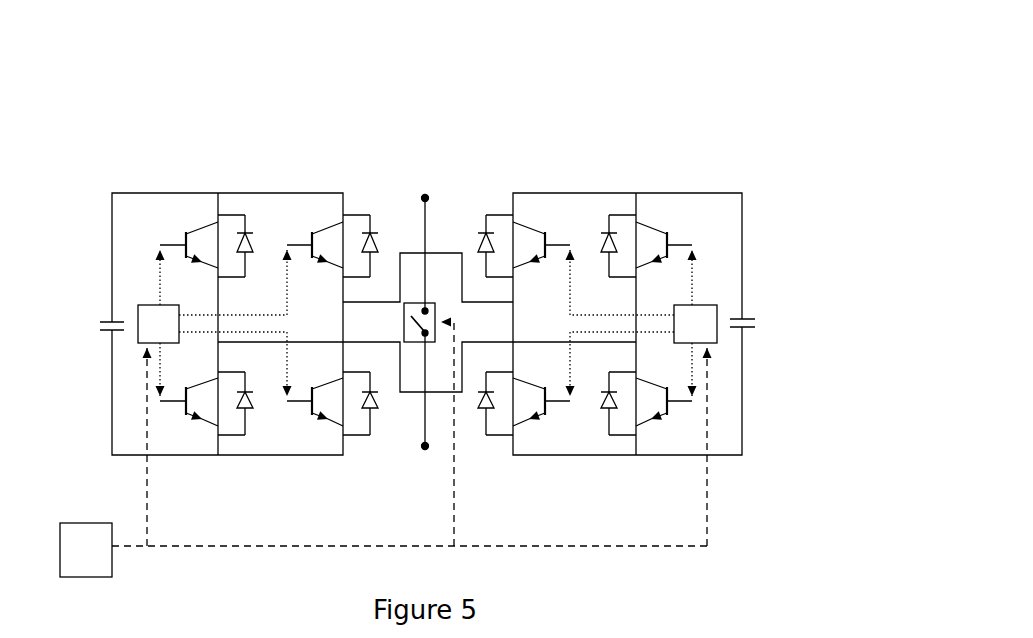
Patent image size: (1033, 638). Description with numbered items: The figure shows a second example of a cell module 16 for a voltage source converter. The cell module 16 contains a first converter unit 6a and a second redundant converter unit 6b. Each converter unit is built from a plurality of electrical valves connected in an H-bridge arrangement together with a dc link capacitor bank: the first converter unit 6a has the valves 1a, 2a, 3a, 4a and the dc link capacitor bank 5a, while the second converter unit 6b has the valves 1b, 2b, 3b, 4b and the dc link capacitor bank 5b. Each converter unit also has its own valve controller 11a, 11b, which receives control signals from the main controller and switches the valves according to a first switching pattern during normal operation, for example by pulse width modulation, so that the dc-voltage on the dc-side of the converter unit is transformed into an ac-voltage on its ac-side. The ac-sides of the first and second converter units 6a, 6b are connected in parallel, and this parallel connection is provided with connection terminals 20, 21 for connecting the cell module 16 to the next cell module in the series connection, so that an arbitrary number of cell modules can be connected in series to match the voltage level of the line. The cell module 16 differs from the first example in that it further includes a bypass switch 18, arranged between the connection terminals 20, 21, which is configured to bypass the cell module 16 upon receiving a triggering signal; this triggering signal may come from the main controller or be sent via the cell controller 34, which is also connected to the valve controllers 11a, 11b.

The cell module 16 is at (540, 103).
The first converter unit 6a is at (250, 191).
The second redundant converter unit 6b is at (655, 191).
The electrical valve 1a is at (213, 240).
The electrical valve 2a is at (352, 238).
The electrical valve 3a is at (227, 424).
The electrical valve 4a is at (350, 417).
The electrical valve 1b is at (497, 235).
The electrical valve 2b is at (623, 232).
The electrical valve 3b is at (510, 412).
The electrical valve 4b is at (623, 420).
The dc link capacitor bank 5a is at (102, 320).
The dc link capacitor bank 5b is at (752, 318).
The valve controller 11a is at (157, 305).
The valve controller 11b is at (700, 305).
The bypass switch 18 is at (428, 303).
The connection terminal 20 is at (429, 197).
The connection terminal 21 is at (430, 450).
The cell controller 34 is at (92, 522).